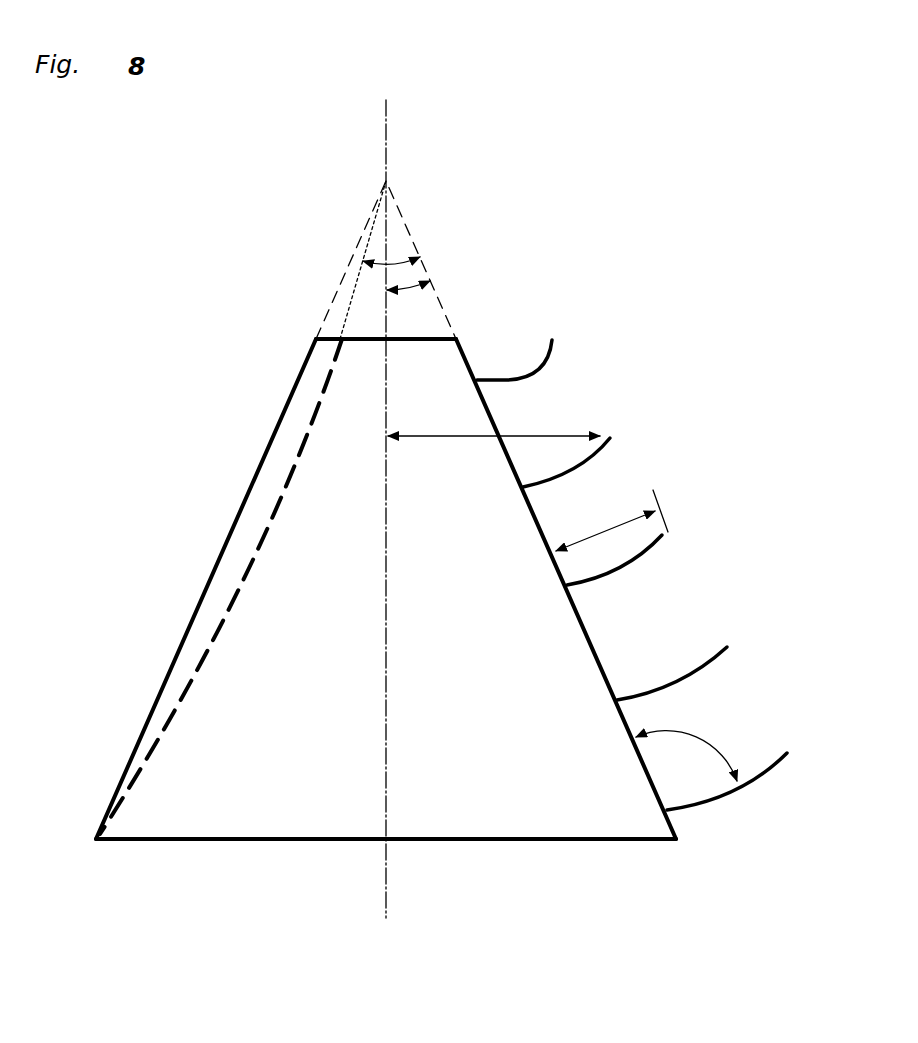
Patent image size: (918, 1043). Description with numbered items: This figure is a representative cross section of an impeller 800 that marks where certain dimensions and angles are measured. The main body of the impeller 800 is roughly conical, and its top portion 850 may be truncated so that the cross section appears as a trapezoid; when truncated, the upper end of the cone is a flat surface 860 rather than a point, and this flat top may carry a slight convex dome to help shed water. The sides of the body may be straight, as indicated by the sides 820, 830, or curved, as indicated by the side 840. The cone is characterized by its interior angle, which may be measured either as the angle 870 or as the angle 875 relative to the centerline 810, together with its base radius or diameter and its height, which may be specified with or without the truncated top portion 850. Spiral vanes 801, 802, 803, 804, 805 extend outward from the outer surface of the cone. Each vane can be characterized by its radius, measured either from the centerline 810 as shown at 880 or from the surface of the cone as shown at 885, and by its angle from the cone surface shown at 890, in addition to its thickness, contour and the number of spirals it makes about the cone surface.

The impeller 800 is at (225, 841).
The spiral vane 801 is at (787, 753).
The spiral vane 802 is at (727, 647).
The spiral vane 803 is at (662, 537).
The spiral vane 804 is at (610, 438).
The spiral vane 805 is at (552, 340).
The centerline 810 is at (394, 103).
The straight body side 820 is at (172, 660).
The straight body side 830 is at (588, 650).
The curved body side 840 is at (225, 628).
The top portion 850 is at (378, 181).
The flat upper end 860 is at (396, 345).
The interior angle 870 is at (397, 262).
The interior angle 875 is at (413, 287).
The vane radius from centerline 880 is at (538, 436).
The vane radius from cone surface 885 is at (600, 525).
The vane angle from cone surface 890 is at (714, 752).